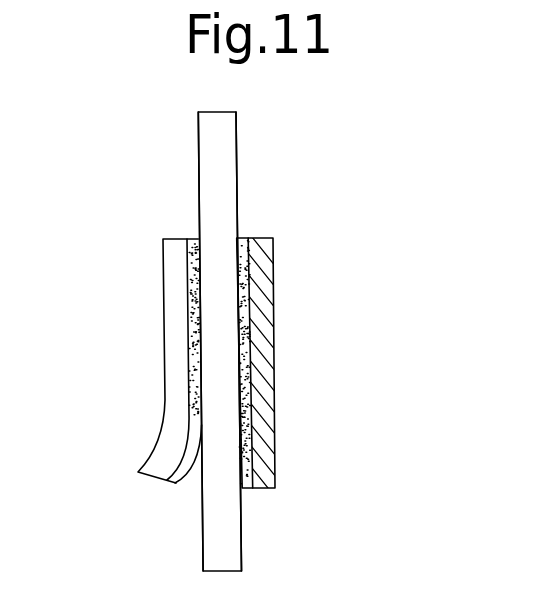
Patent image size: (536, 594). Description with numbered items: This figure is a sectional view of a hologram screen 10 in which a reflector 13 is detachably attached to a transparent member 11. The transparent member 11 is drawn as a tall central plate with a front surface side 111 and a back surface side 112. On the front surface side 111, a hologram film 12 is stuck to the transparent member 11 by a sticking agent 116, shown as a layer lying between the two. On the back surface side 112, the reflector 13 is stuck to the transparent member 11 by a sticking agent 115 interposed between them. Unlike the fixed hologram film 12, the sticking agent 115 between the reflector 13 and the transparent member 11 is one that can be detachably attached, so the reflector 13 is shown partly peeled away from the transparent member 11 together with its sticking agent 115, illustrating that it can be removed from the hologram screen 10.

The hologram screen 10 is at (308, 152).
The transparent member 11 is at (207, 153).
The front surface side 111 is at (237, 180).
The back surface side 112 is at (199, 198).
The hologram film 12 is at (267, 341).
The reflector 13 is at (181, 331).
The sticking agent 115 is at (186, 433).
The sticking agent 116 is at (244, 410).